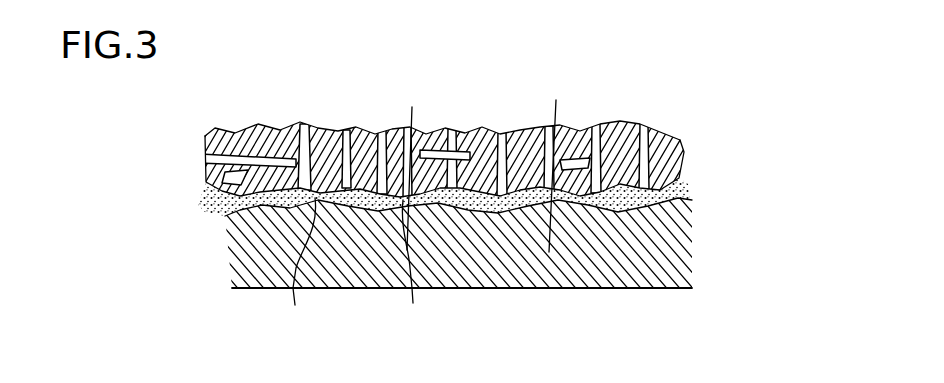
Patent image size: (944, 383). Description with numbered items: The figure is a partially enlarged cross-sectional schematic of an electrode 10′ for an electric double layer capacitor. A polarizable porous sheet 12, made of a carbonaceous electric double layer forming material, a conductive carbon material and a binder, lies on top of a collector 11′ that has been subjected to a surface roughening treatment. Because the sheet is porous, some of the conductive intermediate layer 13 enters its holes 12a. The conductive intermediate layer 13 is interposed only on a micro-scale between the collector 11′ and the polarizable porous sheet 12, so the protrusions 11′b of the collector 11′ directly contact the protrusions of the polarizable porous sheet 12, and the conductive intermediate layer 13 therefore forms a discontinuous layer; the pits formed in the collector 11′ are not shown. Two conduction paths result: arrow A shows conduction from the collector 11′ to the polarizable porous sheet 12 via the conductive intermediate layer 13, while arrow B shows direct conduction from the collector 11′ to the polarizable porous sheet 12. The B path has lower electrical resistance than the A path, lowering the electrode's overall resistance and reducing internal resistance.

The electrode 10′ is at (330, 122).
The polarizable porous sheet 12 is at (670, 148).
The holes 12a is at (602, 130).
The conductive intermediate layer 13 is at (224, 208).
The collector 11′ is at (663, 250).
The protrusions 11′b is at (357, 266).
The arrow A is at (413, 164).
The arrow B is at (559, 161).